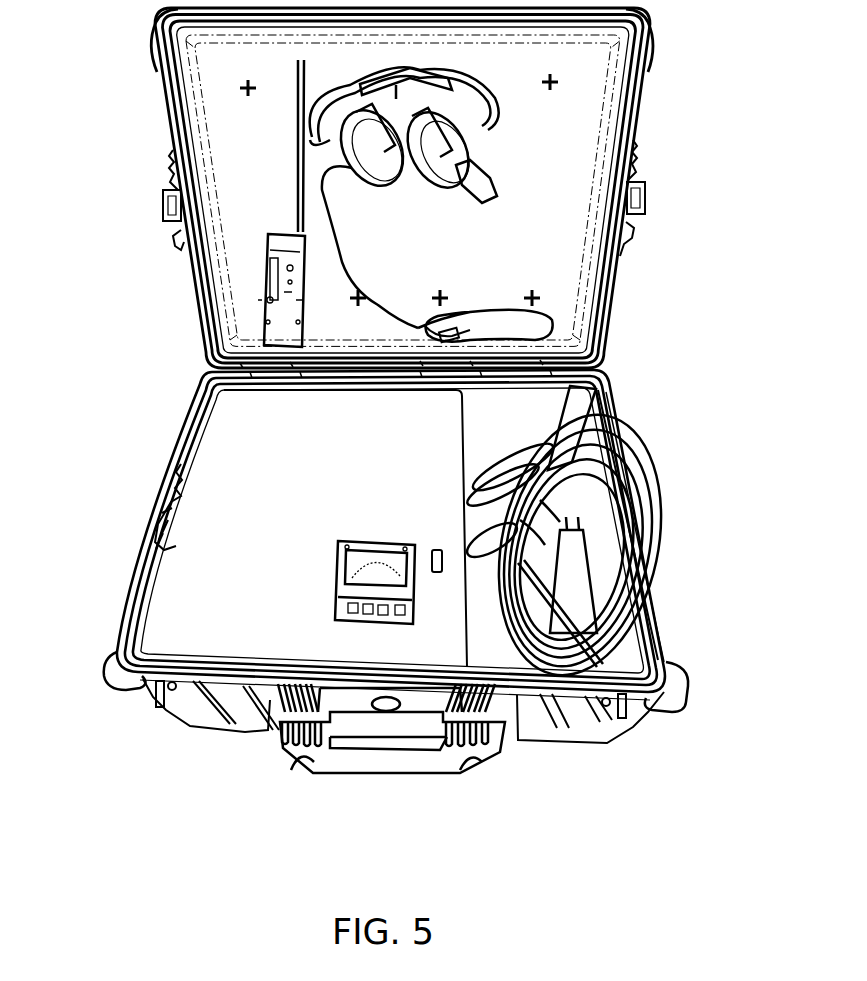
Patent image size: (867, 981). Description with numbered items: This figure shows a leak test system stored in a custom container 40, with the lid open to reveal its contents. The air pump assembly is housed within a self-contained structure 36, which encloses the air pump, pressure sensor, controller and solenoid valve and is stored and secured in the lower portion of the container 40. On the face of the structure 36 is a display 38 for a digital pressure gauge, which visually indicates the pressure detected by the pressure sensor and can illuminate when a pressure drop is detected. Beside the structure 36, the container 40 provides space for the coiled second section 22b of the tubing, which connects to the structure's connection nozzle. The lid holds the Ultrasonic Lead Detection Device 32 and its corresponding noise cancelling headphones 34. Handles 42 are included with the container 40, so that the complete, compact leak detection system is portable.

The container 40 is at (147, 76).
The noise cancelling headphones 34 is at (473, 153).
The Ultrasonic Lead Detection Device 32 is at (256, 285).
The self-contained structure 36 is at (223, 517).
The display 38 is at (343, 590).
The second section of the tubing 22b is at (653, 480).
The handles 42 is at (472, 777).